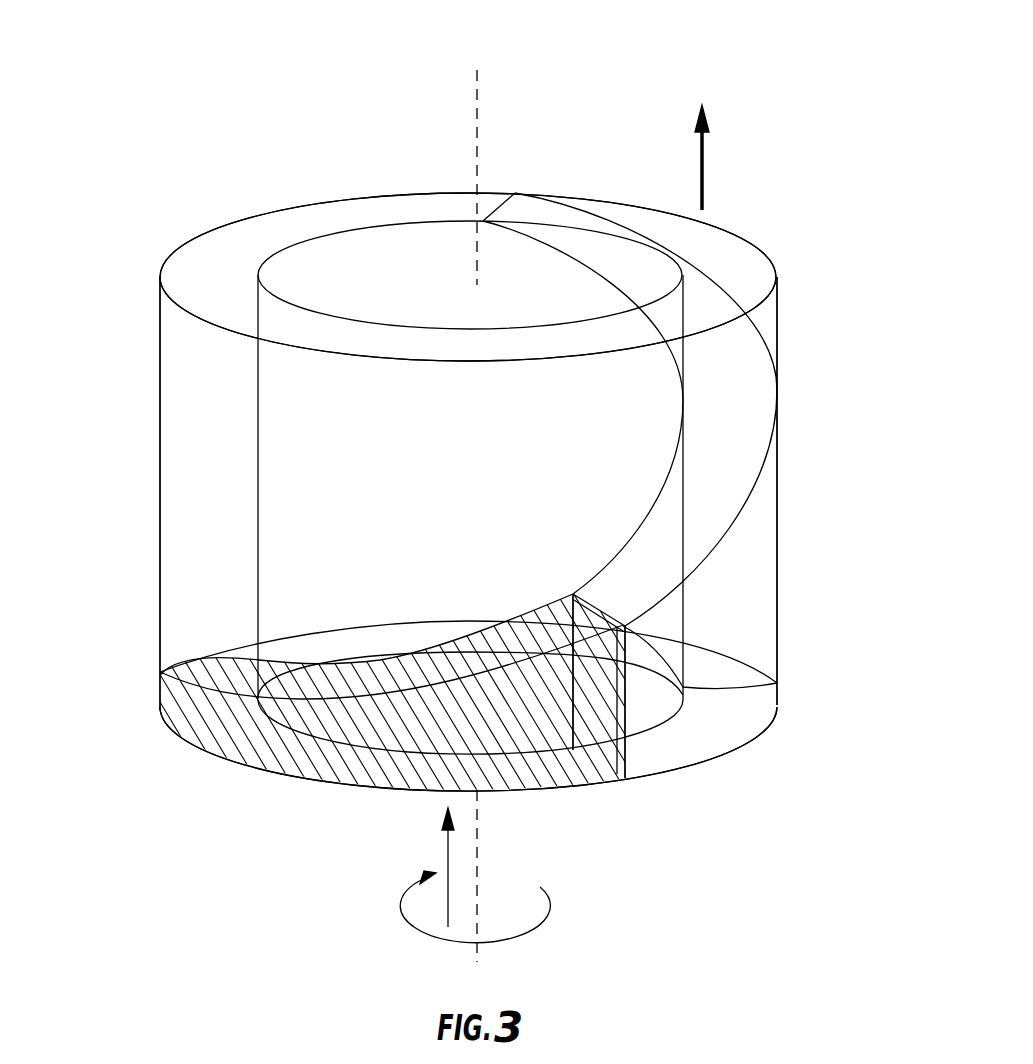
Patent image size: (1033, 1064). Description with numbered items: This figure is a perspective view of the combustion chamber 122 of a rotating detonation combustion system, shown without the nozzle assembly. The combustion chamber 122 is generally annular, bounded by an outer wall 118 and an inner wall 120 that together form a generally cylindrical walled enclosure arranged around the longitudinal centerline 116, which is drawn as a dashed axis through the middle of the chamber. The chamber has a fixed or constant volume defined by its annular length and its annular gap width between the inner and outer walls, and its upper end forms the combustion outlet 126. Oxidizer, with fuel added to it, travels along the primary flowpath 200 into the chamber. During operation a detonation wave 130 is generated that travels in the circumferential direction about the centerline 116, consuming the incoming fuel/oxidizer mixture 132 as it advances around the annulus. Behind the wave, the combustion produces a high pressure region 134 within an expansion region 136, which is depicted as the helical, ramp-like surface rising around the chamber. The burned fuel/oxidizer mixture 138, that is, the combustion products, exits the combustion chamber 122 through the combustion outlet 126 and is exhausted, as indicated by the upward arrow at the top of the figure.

The primary flowpath 200 is at (613, 104).
The longitudinal centerline 116 is at (477, 157).
The outer wall 118 is at (160, 325).
The inner wall 120 is at (258, 525).
The combustion chamber 122 is at (213, 491).
The combustion outlet 126 is at (228, 276).
The detonation wave 130 is at (624, 754).
The incoming fuel/oxidizer mixture 132 is at (447, 853).
The high pressure region 134 is at (713, 702).
The expansion region 136 is at (750, 430).
The burned fuel/oxidizer mixture 138 is at (702, 170).